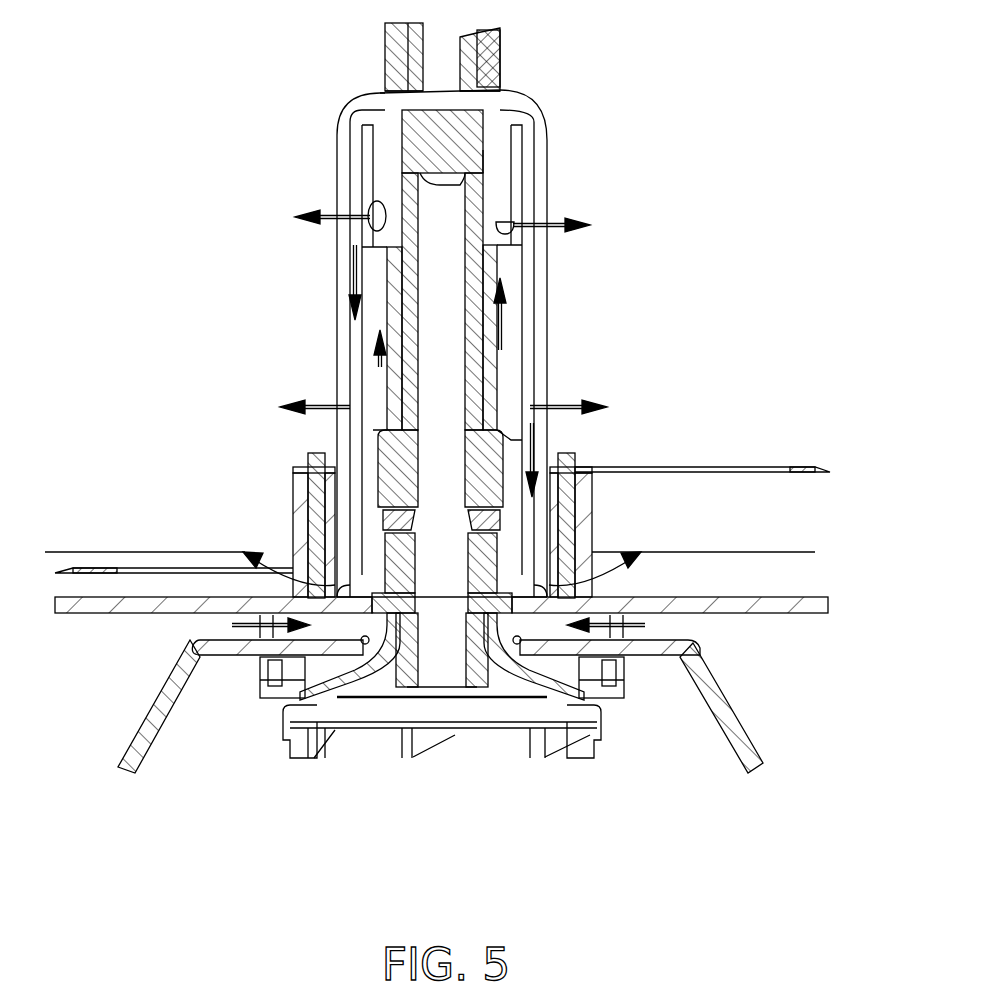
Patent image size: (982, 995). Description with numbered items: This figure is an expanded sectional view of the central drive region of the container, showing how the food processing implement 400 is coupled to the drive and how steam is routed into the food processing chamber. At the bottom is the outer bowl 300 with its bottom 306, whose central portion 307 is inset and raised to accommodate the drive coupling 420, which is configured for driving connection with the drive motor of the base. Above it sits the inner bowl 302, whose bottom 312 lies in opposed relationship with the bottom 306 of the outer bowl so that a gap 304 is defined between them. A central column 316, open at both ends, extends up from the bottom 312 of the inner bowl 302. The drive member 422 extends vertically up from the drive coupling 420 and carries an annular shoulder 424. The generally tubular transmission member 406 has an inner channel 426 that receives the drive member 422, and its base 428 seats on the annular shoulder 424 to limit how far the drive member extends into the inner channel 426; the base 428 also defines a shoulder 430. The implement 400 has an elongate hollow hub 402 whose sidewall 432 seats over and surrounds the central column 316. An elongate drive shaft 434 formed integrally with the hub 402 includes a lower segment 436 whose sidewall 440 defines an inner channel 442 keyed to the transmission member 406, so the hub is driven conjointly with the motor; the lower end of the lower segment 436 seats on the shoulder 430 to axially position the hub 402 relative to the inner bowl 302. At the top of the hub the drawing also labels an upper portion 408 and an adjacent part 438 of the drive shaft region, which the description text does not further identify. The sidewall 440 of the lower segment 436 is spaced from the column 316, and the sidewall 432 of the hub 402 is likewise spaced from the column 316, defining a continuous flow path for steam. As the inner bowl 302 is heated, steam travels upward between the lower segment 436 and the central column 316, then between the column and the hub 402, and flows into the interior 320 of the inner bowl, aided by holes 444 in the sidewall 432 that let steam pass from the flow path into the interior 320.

The outer bowl 300 is at (735, 712).
The inner bowl 302 is at (822, 597).
The gap 304 is at (670, 630).
The bottom 306 is at (142, 710).
The central portion 307 is at (742, 742).
The bottom 312 is at (112, 614).
The central column 316 is at (523, 282).
The interior 320 is at (153, 431).
The food processing implement 400 is at (535, 103).
The hub 402 is at (338, 147).
The transmission member 406 is at (400, 262).
The stem tube 408 is at (395, 38).
The drive coupling 420 is at (380, 300).
The drive member 422 is at (490, 370).
The annular shoulder 424 is at (535, 465).
The inner channel 426 is at (453, 185).
The base 428 is at (545, 445).
The shoulder 430 is at (490, 393).
The sidewall 432 is at (337, 196).
The drive shaft 434 is at (480, 172).
The lower segment 436 is at (490, 314).
The tube insert 438 is at (500, 50).
The sidewall 440 is at (390, 330).
The inner channel 442 is at (480, 258).
The holes 444 is at (505, 218).